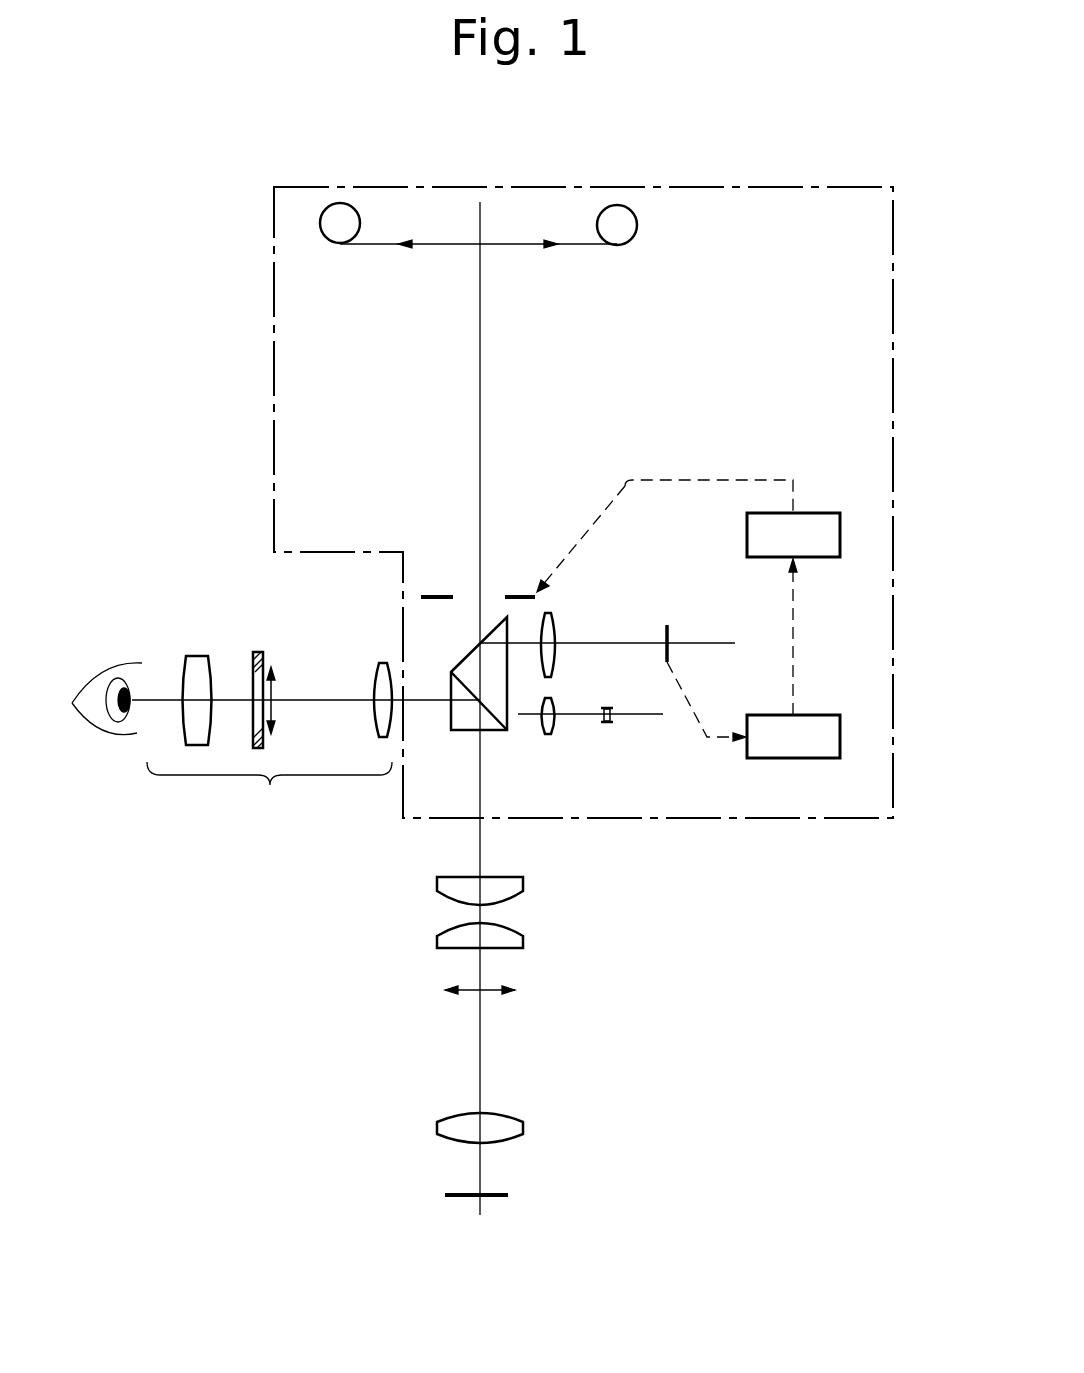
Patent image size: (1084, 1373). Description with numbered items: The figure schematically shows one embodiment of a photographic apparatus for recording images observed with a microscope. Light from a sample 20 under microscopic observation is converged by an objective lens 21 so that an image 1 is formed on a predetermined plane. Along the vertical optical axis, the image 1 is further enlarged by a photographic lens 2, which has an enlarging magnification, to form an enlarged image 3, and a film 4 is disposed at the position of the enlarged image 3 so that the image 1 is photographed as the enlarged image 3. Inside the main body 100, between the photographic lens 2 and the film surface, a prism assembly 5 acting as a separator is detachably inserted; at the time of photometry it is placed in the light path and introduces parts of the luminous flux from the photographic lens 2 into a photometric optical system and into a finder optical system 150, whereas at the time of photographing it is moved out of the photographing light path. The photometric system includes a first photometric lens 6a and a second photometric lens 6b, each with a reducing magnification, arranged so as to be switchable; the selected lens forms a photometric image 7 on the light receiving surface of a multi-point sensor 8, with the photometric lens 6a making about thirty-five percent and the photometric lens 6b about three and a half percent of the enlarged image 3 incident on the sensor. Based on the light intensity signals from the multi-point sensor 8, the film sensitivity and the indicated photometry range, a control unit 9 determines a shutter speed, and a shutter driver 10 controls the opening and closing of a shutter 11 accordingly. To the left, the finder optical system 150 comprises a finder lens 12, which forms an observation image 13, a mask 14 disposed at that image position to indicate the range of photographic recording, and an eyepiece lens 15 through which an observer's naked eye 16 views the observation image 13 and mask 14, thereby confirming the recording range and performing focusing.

The image 1 is at (483, 992).
The photographic lens 2 is at (540, 865).
The enlarged image 3 is at (535, 248).
The film 4 is at (598, 246).
The prism assembly 5 is at (470, 662).
The photometric lens 6a is at (553, 612).
The photometric lens 6b is at (625, 740).
The photometric image 7 is at (657, 634).
The multi-point sensor 8 is at (675, 641).
The control unit 9 is at (805, 745).
The shutter driver 10 is at (745, 537).
The shutter 11 is at (433, 592).
The finder lens 12 is at (383, 660).
The observation image 13 is at (275, 690).
The mask 14 is at (258, 652).
The eyepiece lens 15 is at (197, 665).
The naked eye 16 is at (125, 683).
The sample 20 is at (500, 1193).
The objective lens 21 is at (523, 1128).
The main body 100 is at (812, 183).
The finder optical system 150 is at (286, 807).